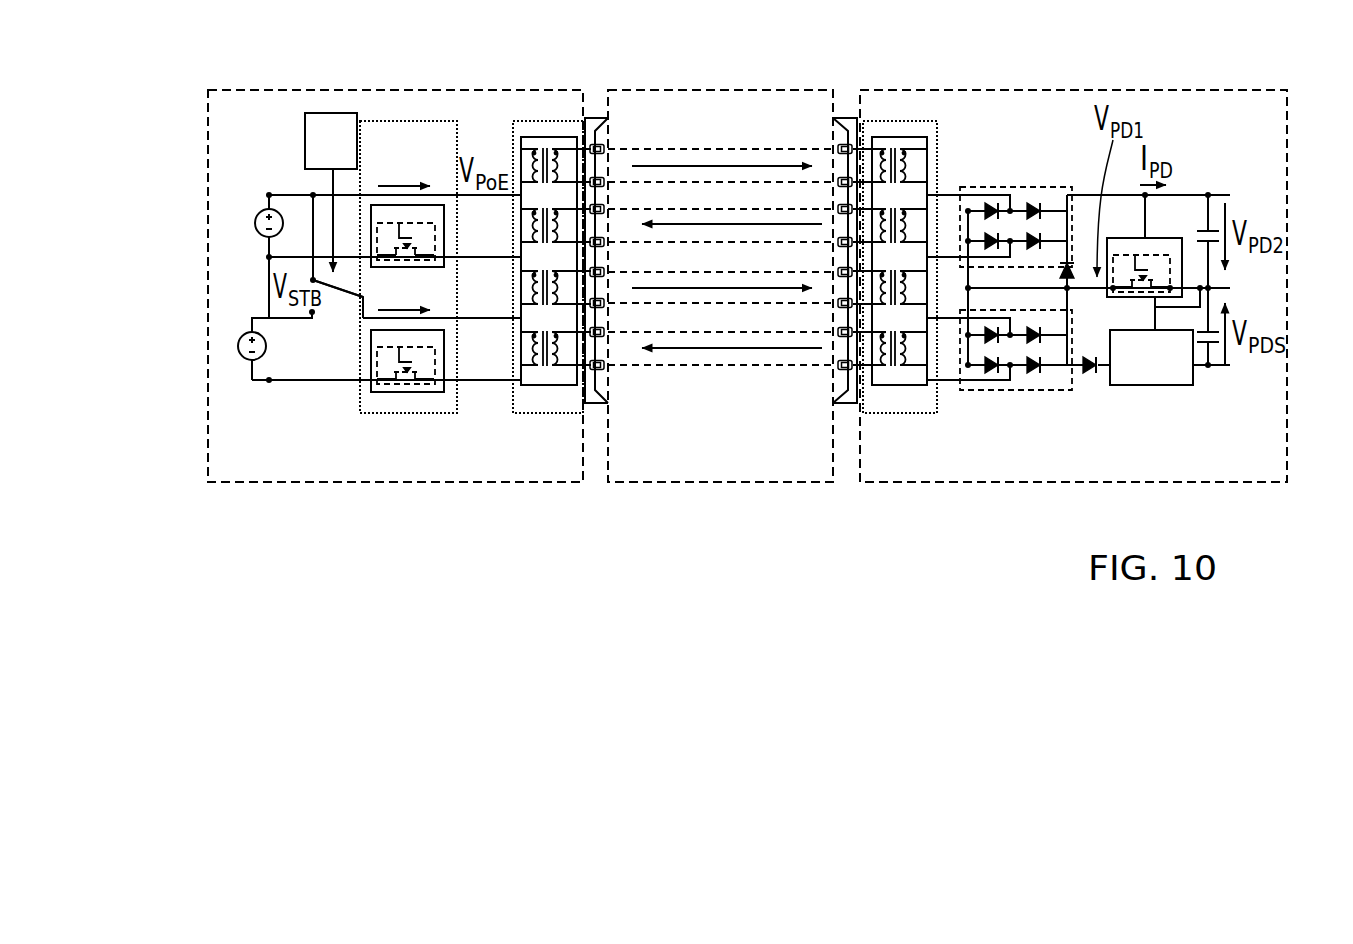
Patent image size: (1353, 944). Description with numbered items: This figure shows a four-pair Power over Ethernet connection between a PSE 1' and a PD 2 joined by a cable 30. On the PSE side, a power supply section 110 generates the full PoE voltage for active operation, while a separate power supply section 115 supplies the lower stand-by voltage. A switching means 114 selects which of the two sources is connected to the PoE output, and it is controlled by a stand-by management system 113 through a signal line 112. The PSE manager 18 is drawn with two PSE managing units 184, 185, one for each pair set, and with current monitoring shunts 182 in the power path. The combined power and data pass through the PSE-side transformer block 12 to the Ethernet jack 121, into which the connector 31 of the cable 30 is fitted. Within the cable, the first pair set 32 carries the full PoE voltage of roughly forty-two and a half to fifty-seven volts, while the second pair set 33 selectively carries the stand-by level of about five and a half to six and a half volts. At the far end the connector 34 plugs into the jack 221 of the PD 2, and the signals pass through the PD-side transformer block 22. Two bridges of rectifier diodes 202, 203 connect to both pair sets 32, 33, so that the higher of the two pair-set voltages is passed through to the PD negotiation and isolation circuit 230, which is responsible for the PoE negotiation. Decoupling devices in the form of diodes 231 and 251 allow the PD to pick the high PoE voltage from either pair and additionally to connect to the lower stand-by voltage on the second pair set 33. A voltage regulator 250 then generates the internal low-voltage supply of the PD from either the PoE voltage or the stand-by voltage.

The PSE 1' is at (395, 252).
The PD 2 is at (1170, 88).
The PSE transformer unit 12 is at (517, 118).
The PSE manager 18 is at (410, 100).
The PD transformer unit 22 is at (907, 117).
The cable 30 is at (700, 78).
The connector 31 is at (607, 130).
The pair set 32 is at (689, 141).
The pair set 33 is at (689, 263).
The connector 34 is at (834, 130).
The power supply section 110 is at (240, 219).
The signal line 112 is at (330, 190).
The stand-by management system 113 is at (304, 136).
The switching means 114 is at (330, 297).
The power supply section 115 is at (235, 345).
The jack 121 is at (592, 117).
The current monitoring shunts 182 is at (338, 399).
The PSE managing unit 184 is at (446, 265).
The PSE managing unit 185 is at (440, 393).
The rectifier diodes 202 is at (1003, 178).
The rectifier diodes 203 is at (1010, 392).
The jack 221 is at (850, 117).
The PD negotiation and isolation circuit 230 is at (1185, 245).
The diode 231 is at (1073, 260).
The voltage regulator 250 is at (1155, 388).
The diode 251 is at (1090, 378).